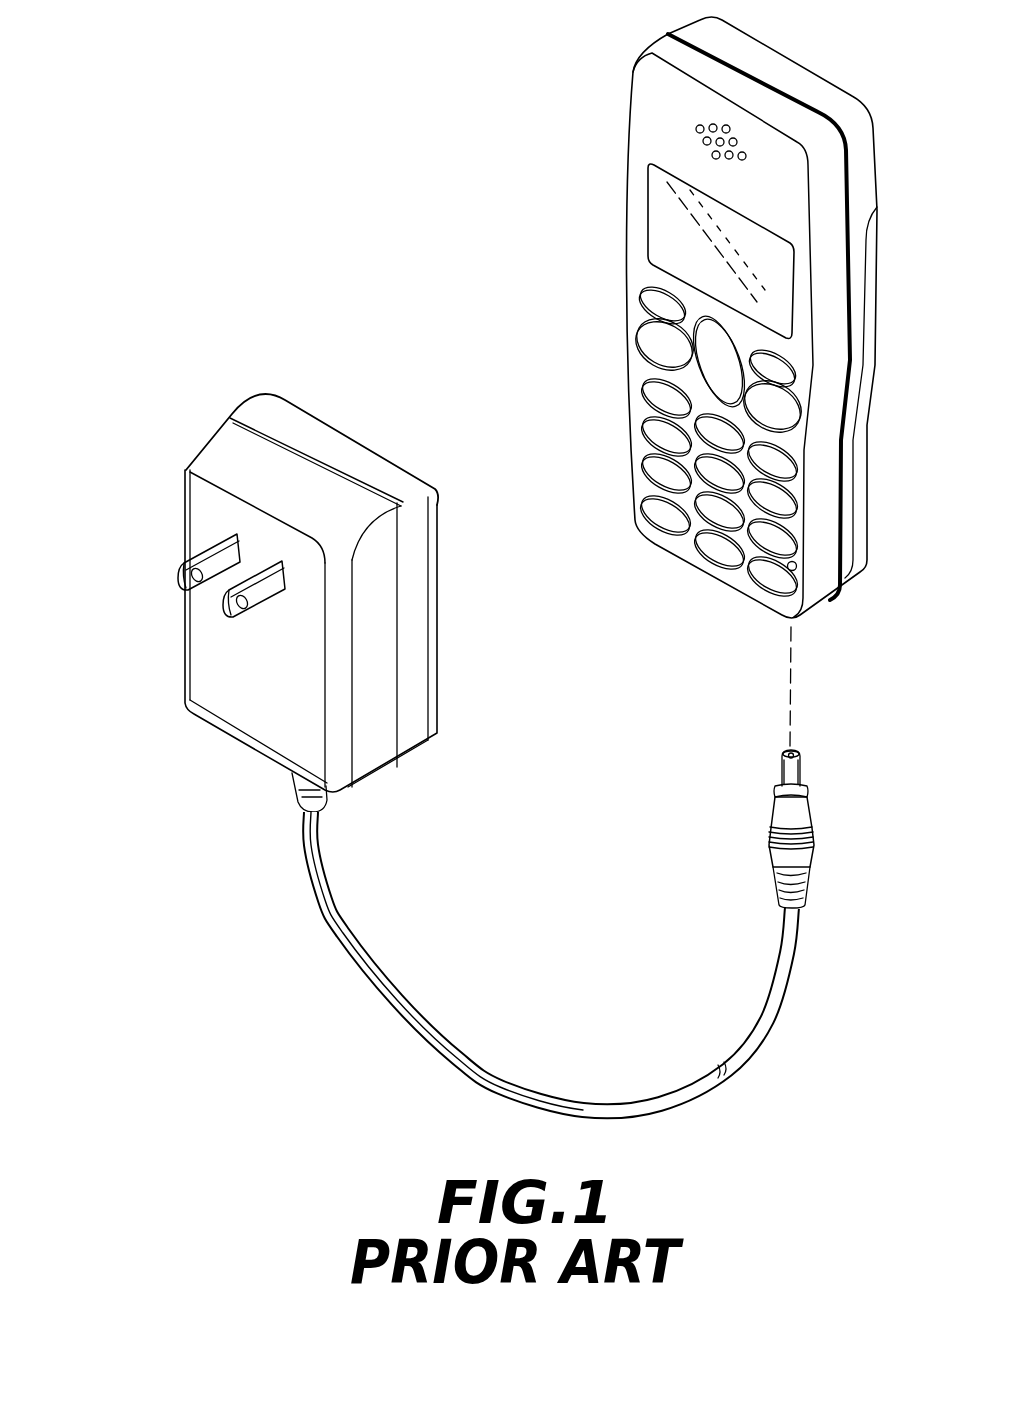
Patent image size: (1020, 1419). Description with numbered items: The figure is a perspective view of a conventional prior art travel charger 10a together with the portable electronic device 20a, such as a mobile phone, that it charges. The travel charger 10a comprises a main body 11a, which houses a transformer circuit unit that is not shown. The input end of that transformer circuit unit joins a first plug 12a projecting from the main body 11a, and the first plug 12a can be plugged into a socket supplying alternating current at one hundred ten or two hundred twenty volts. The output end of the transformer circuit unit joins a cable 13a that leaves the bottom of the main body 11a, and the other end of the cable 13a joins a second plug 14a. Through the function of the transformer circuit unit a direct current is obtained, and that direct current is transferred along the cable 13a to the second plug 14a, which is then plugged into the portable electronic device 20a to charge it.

The travel charger 10a is at (277, 362).
The main body 11a is at (222, 440).
The first plug 12a is at (178, 580).
The cable 13a is at (590, 1107).
The second plug 14a is at (806, 848).
The portable electronic device 20a is at (575, 287).